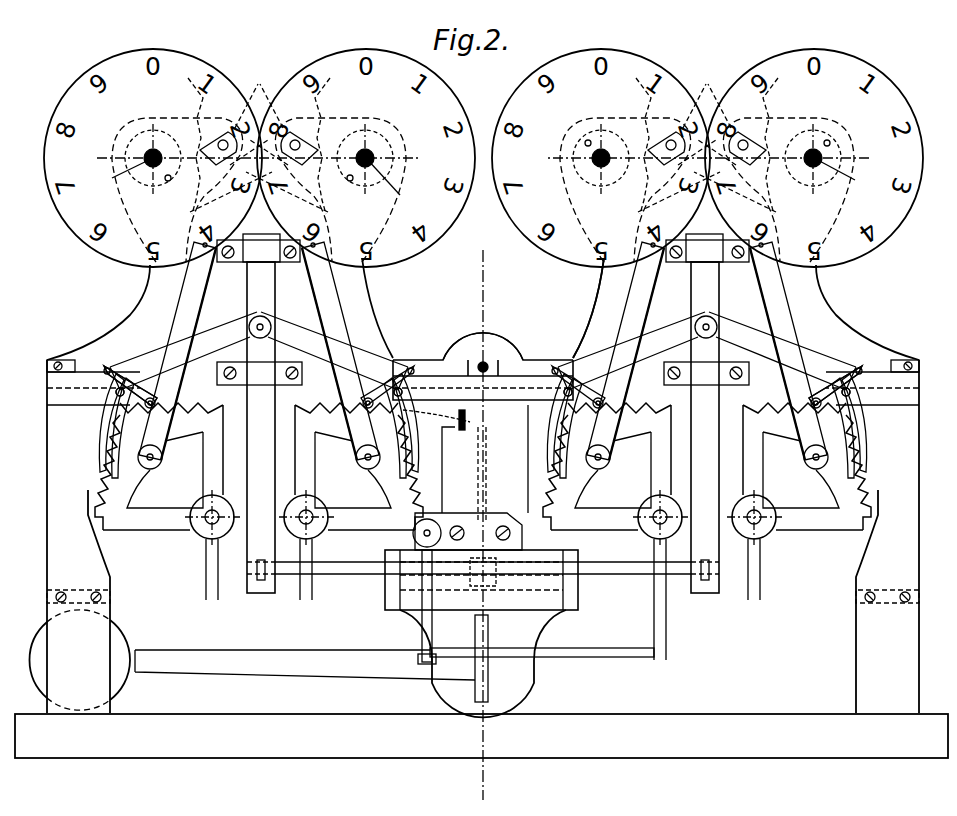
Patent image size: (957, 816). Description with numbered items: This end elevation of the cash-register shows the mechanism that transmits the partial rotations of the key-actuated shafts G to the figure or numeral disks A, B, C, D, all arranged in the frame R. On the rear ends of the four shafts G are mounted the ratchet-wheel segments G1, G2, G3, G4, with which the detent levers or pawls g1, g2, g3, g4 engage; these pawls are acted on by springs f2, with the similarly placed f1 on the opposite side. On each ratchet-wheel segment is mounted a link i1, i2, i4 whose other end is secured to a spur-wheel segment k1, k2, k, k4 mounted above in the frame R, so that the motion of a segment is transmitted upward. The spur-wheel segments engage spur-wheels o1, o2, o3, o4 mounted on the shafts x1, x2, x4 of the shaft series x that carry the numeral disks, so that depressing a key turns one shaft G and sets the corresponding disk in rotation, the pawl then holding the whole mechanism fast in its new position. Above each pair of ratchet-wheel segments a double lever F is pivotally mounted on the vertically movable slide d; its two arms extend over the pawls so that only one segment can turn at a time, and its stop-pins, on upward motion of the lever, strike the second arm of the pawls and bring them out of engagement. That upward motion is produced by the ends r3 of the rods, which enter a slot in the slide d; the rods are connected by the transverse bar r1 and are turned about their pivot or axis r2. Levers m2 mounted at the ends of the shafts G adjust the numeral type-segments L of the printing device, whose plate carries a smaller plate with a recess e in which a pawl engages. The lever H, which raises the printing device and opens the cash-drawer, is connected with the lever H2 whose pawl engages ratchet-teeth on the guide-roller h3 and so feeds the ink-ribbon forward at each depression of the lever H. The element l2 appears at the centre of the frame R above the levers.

The numeral disk A is at (576, 254).
The numeral disk B is at (888, 250).
The numeral disk C is at (60, 228).
The numeral disk D is at (436, 246).
The spur-wheel segment k1 is at (194, 100).
The spur-wheel segment k4 is at (322, 100).
The pawl k is at (636, 98).
The spur-wheel segment k2 is at (775, 100).
The spur-wheel o3 is at (165, 188).
The spur-wheel o4 is at (349, 190).
The spur-wheel o1 is at (582, 138).
The spur-wheel o2 is at (835, 138).
The shaft x4 is at (122, 173).
The shaft x1 is at (388, 184).
The shaft x2 is at (842, 176).
The recess e is at (483, 239).
The link i4 is at (204, 299).
The link i1 is at (326, 299).
The link i2 is at (650, 297).
The frame R is at (392, 354).
The center bearing l2 is at (479, 342).
The spring f2 is at (124, 362).
The bell crank lever f1 is at (840, 364).
The pivot pin x is at (122, 388).
The double lever F is at (217, 376).
The slide d is at (268, 399).
The detent pawl g4 is at (106, 438).
The detent pawl g3 is at (412, 458).
The detent pawl g2 is at (552, 458).
The detent pawl g1 is at (862, 452).
The numeral type-segment L is at (432, 487).
The ratchet-wheel segment G4 is at (155, 528).
The ratchet-wheel segment G3 is at (355, 528).
The ratchet-wheel segment G2 is at (603, 528).
The ratchet-wheel segment G1 is at (812, 528).
The shaft G is at (215, 532).
The transverse bar r1 is at (355, 574).
The pivot r2 is at (257, 574).
The rod end r3 is at (710, 572).
The guide-roller h3 is at (118, 650).
The lever H2 is at (280, 660).
The lever m2 is at (592, 650).
The lever H is at (488, 672).